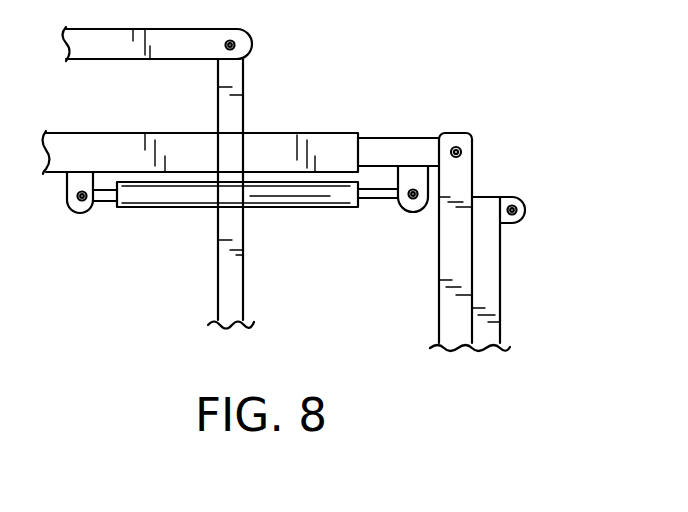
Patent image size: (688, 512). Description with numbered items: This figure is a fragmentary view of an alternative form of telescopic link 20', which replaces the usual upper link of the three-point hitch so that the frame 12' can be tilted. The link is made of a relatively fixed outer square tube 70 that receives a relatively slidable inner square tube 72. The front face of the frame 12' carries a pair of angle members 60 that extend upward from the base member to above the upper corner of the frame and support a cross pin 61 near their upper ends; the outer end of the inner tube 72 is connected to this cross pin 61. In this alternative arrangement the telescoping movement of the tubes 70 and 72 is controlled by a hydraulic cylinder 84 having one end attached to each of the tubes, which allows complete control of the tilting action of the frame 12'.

The frame 12' is at (514, 274).
The telescopic link 20' is at (201, 119).
The angle members 60 is at (463, 180).
The cross pin 61 is at (458, 145).
The outer square tube 70 is at (337, 133).
The inner square tube 72 is at (412, 136).
The hydraulic cylinder 84 is at (285, 200).